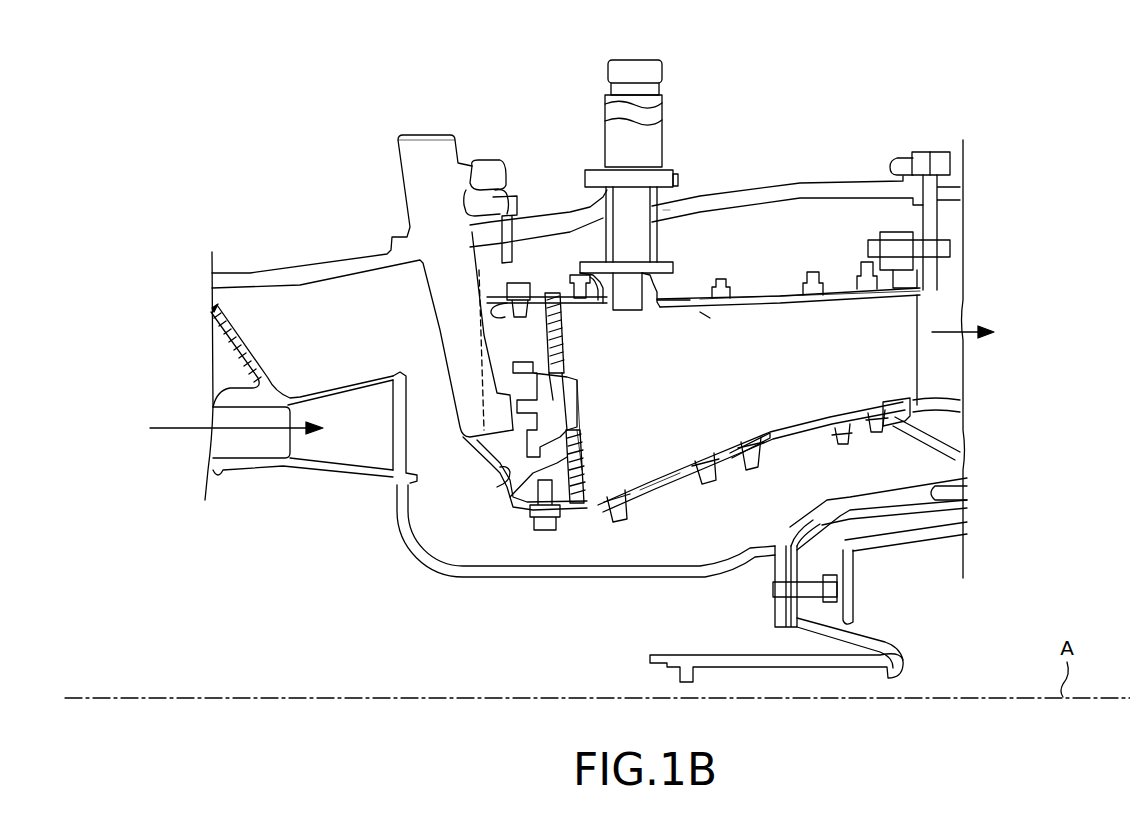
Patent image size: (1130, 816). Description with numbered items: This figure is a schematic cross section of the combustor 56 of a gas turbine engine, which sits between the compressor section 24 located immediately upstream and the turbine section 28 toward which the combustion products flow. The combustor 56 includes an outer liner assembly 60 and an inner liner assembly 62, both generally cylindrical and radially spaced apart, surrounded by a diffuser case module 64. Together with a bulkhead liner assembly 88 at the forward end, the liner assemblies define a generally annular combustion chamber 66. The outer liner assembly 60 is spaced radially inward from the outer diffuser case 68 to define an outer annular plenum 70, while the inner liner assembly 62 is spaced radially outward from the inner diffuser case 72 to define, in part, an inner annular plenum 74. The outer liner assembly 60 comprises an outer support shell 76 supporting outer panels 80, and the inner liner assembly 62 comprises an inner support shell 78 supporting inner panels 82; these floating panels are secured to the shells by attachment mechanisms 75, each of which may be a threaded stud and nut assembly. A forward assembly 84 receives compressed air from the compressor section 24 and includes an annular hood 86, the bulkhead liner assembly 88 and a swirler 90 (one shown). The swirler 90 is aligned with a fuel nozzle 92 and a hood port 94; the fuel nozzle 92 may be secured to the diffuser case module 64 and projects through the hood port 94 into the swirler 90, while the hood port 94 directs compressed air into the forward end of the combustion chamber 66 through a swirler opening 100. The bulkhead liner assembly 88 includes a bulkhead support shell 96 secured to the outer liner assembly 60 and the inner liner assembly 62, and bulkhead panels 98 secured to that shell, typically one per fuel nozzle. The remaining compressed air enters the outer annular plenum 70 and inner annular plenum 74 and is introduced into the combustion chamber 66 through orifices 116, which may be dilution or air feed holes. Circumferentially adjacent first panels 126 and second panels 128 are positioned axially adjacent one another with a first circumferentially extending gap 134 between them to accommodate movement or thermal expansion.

The compressor section 24 is at (194, 428).
The turbine section 28 is at (1006, 332).
The combustor 56 is at (852, 94).
The outer liner assembly 60 is at (781, 269).
The inner liner assembly 62 is at (737, 475).
The diffuser case module 64 is at (772, 176).
The combustion chamber 66 is at (830, 350).
The outer diffuser case 68 is at (710, 194).
The outer annular plenum 70 is at (690, 225).
The inner diffuser case 72 is at (608, 578).
The inner annular plenum 74 is at (779, 464).
The attachment mechanism 75 is at (883, 435).
The outer support shell 76 is at (744, 293).
The inner support shell 78 is at (810, 440).
The outer panels 80 is at (660, 308).
The inner panels 82 is at (660, 470).
The forward assembly 84 is at (493, 532).
The annular hood 86 is at (503, 483).
The bulkhead liner assembly 88 is at (584, 342).
The swirler 90 is at (583, 437).
The fuel nozzle 92 is at (457, 285).
The hood port 94 is at (497, 470).
The bulkhead support shell 96 is at (507, 500).
The bulkhead panels 98 is at (583, 462).
The swirler opening 100 is at (578, 400).
The orifices 116 is at (798, 304).
The first panels 126 is at (680, 311).
The second panels 128 is at (840, 297).
The first circumferentially extending gap 134 is at (752, 304).